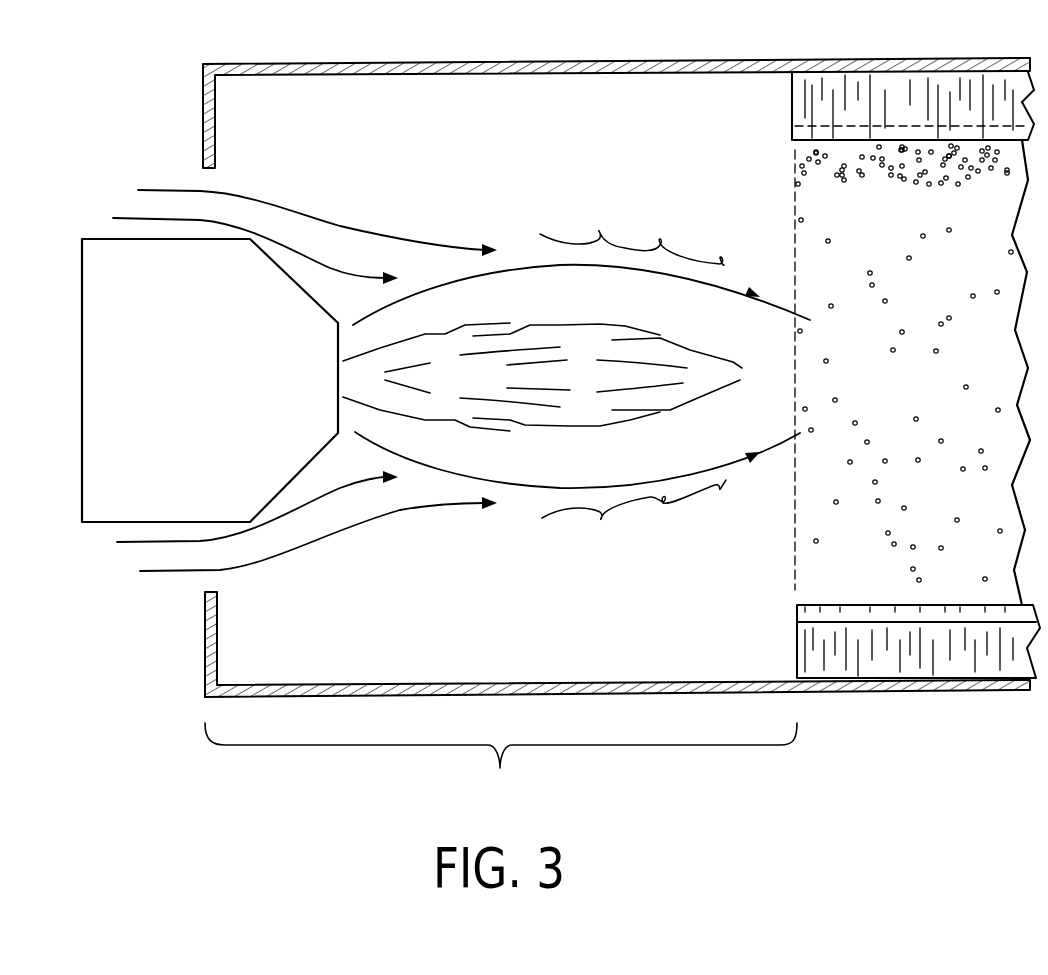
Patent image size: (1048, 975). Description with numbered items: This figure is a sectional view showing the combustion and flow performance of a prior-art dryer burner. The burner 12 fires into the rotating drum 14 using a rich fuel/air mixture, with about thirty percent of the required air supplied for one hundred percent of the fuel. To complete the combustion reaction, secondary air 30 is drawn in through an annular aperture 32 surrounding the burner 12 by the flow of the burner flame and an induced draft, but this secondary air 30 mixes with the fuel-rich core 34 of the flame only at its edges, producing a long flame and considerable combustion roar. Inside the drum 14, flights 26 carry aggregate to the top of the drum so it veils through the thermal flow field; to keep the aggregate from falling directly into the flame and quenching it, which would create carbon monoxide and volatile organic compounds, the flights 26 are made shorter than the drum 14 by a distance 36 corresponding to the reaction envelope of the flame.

The burner 12 is at (82, 377).
The rotating drum 14 is at (615, 58).
The flights 26 is at (810, 106).
The secondary air 30 is at (332, 243).
The annular aperture 32 is at (187, 177).
The fuel-rich core 34 is at (526, 312).
The distance 36 is at (501, 763).